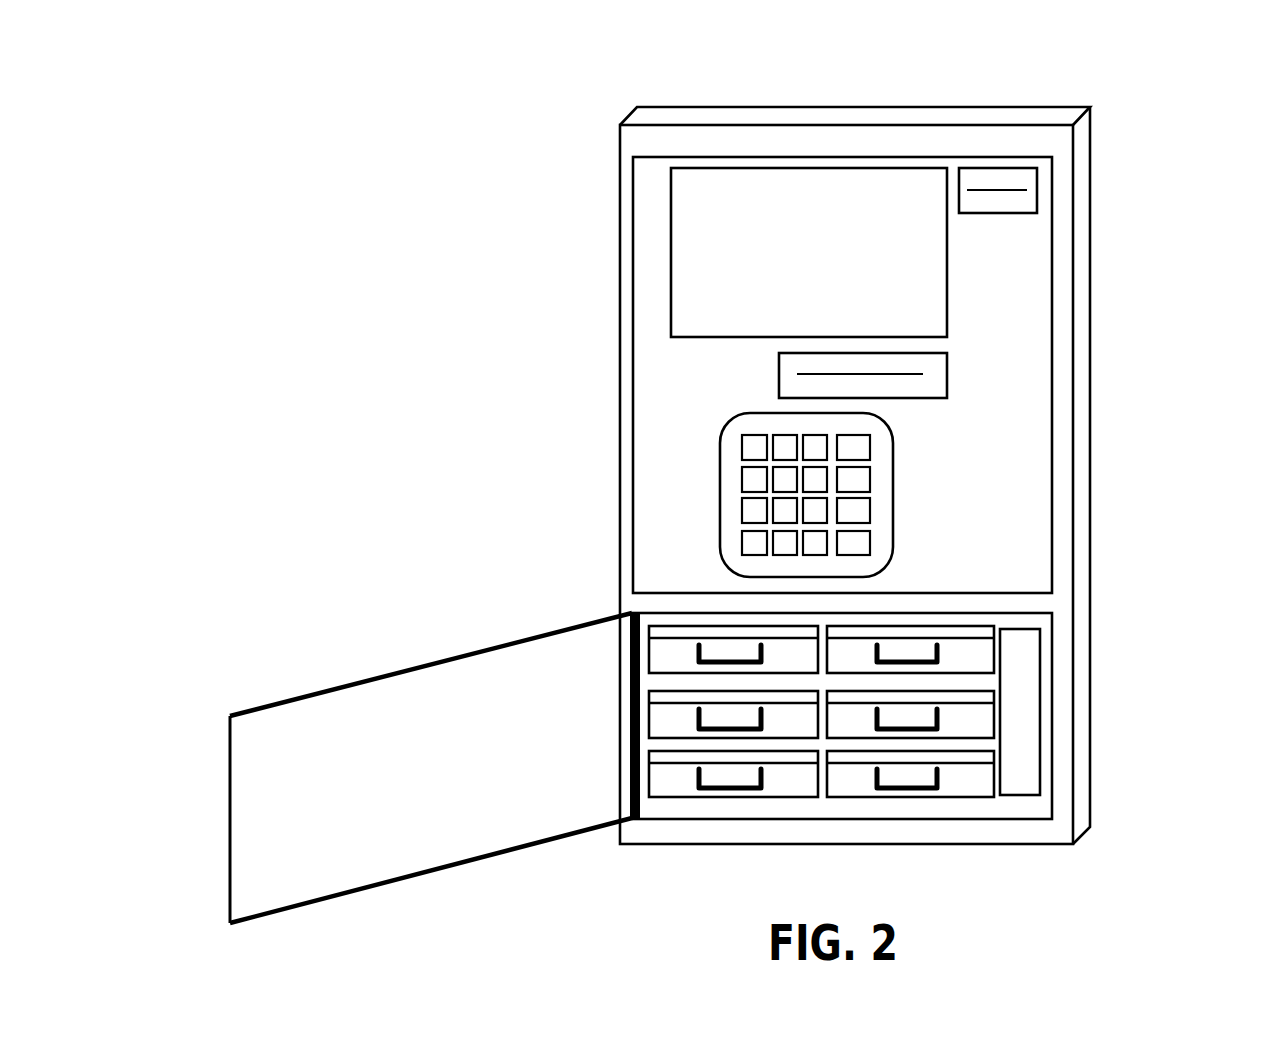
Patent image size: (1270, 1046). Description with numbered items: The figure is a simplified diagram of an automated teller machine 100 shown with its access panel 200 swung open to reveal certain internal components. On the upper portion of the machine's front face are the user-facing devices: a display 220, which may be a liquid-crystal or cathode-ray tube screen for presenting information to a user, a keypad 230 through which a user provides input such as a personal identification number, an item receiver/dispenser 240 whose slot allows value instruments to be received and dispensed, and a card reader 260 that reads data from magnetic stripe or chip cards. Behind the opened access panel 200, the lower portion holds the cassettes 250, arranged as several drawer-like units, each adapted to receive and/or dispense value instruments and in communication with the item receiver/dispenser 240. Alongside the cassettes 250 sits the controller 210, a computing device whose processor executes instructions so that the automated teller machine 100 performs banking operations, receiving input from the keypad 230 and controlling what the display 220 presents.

The automated teller machine 100 is at (1050, 113).
The access panel 200 is at (285, 740).
The controller 210 is at (1022, 640).
The display 220 is at (923, 315).
The keypad 230 is at (880, 520).
The item receiver/dispenser 240 is at (933, 365).
The cassettes 250 is at (668, 653).
The card reader 260 is at (1022, 203).